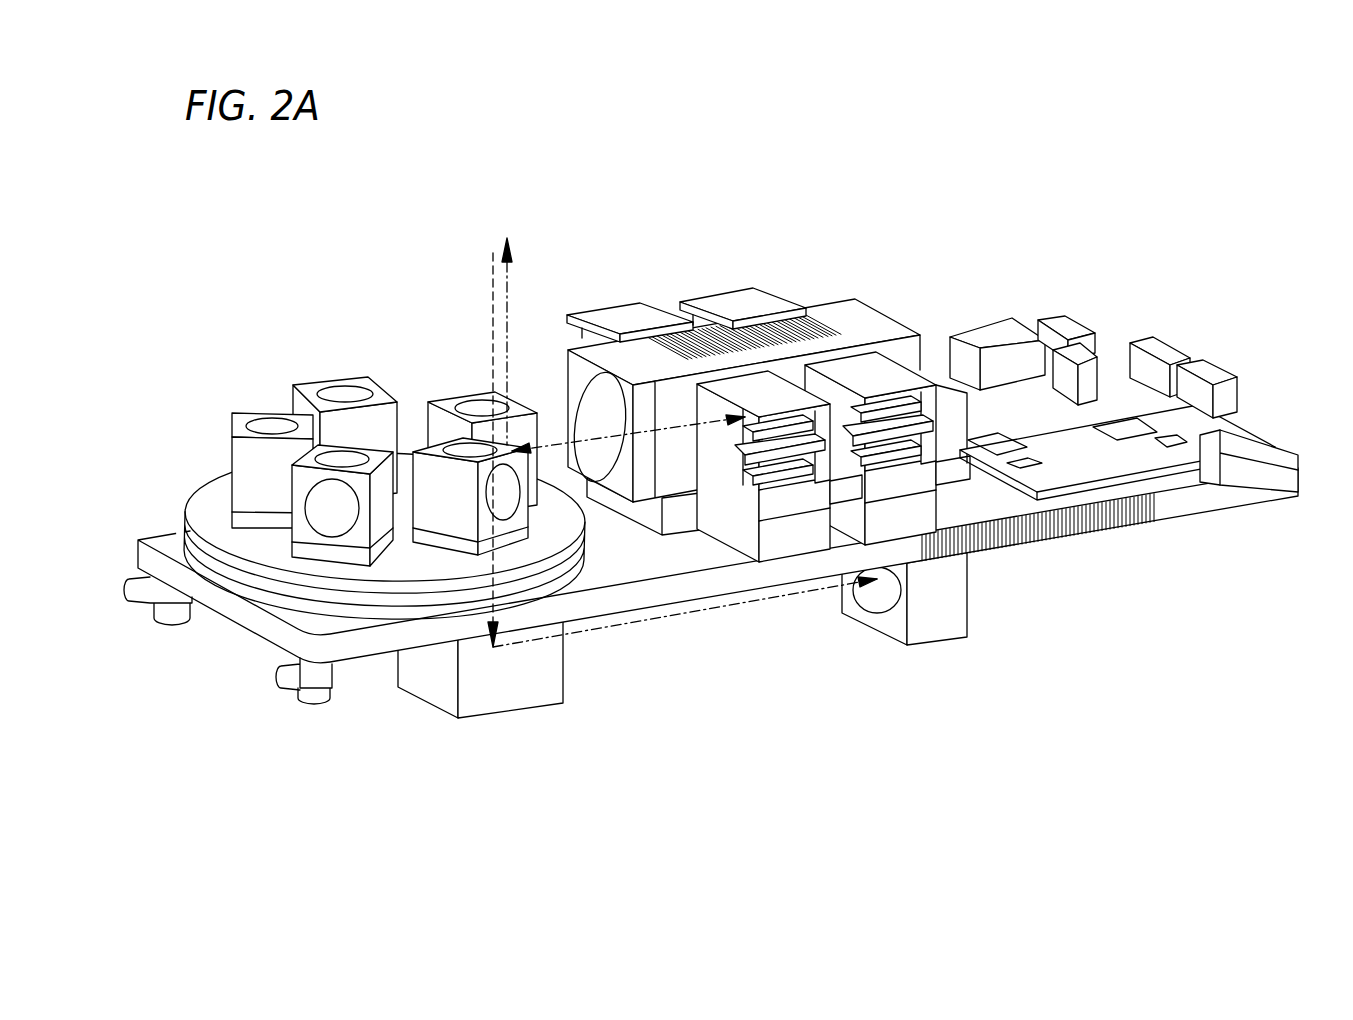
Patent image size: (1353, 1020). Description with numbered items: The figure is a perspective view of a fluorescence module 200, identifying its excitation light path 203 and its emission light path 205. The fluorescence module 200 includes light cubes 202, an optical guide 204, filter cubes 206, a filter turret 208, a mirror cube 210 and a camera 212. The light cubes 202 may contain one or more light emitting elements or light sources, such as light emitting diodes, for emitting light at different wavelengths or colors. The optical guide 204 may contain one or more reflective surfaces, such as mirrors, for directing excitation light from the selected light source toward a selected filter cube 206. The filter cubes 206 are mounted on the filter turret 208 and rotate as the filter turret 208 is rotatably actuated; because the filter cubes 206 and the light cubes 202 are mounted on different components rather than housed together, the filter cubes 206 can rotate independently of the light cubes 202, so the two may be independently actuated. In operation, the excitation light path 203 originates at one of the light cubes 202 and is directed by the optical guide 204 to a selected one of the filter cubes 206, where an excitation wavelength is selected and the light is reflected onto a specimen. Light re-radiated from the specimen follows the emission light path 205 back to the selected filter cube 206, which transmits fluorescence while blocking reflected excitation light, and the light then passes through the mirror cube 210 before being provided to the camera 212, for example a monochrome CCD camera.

The fluorescence module 200 is at (1031, 181).
The light cubes 202 is at (733, 322).
The excitation light path 203 is at (508, 278).
The optical guide 204 is at (832, 328).
The emission light path 205 is at (686, 612).
The filter cubes 206 is at (237, 423).
The filter turret 208 is at (265, 554).
The mirror cube 210 is at (497, 693).
The camera 212 is at (930, 627).